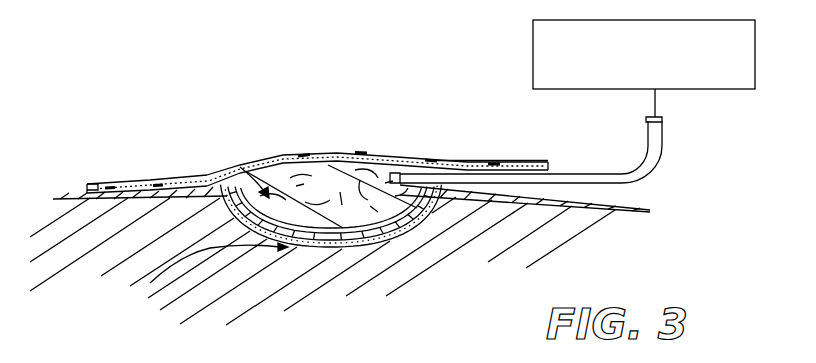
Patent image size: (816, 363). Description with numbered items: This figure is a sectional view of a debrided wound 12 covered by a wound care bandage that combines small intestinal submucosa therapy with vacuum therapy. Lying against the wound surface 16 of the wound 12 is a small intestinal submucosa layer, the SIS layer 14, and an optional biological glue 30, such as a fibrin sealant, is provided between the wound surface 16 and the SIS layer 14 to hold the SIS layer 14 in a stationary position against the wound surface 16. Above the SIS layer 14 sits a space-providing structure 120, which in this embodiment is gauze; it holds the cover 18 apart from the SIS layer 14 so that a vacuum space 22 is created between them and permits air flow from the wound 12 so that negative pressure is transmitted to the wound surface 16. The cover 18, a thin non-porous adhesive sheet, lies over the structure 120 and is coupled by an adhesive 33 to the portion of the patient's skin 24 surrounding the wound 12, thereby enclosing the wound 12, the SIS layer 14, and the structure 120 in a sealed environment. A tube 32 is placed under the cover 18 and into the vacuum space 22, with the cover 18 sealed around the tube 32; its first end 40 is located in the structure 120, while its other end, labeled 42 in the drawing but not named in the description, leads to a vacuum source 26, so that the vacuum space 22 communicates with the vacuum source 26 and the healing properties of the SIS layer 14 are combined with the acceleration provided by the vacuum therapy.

The debrided wound 12 is at (340, 255).
The small intestinal submucosa (SIS) layer 14 is at (310, 247).
The wound surface 16 is at (412, 222).
The cover 18 is at (353, 153).
The vacuum space 22 is at (325, 204).
The skin 24 is at (68, 194).
The vacuum source 26 is at (533, 53).
The biological glue 30 is at (328, 247).
The tube 32 is at (638, 170).
The adhesive 33 is at (496, 166).
The first end of tube 40 is at (400, 176).
The connecting line 42 is at (655, 102).
The structure 120 is at (238, 163).